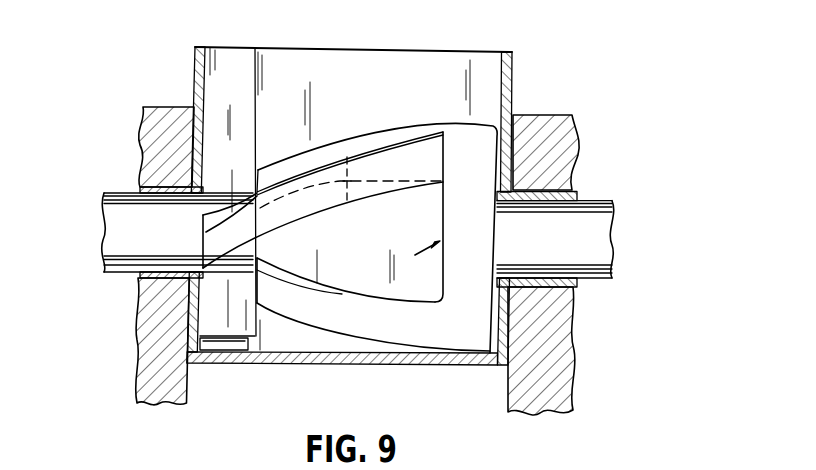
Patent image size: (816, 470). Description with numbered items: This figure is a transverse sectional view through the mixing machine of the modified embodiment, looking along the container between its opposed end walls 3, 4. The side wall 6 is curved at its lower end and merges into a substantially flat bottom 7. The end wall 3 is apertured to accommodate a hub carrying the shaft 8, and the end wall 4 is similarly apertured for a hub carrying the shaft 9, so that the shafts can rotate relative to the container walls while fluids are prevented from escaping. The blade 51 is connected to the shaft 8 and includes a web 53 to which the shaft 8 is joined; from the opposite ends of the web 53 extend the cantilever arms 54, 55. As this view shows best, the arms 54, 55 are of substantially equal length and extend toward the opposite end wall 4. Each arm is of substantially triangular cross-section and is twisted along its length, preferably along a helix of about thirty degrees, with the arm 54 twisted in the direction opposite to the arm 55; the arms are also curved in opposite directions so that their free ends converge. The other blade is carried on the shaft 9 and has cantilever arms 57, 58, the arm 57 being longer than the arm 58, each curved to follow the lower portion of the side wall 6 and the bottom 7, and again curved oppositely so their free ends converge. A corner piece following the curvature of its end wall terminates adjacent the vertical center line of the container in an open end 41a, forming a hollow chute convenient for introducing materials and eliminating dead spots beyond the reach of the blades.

The end wall 3 is at (513, 66).
The end wall 4 is at (198, 63).
The side wall 6 is at (382, 56).
The bottom 7 is at (356, 364).
The shaft 8 is at (613, 210).
The shaft 9 is at (103, 219).
The open end 41a is at (227, 350).
The blade 51 is at (416, 253).
The web 53 is at (447, 215).
The cantilever arm 54 is at (386, 133).
The cantilever arm 55 is at (362, 302).
The cantilever arm 57 is at (437, 158).
The cantilever arm 58 is at (352, 192).